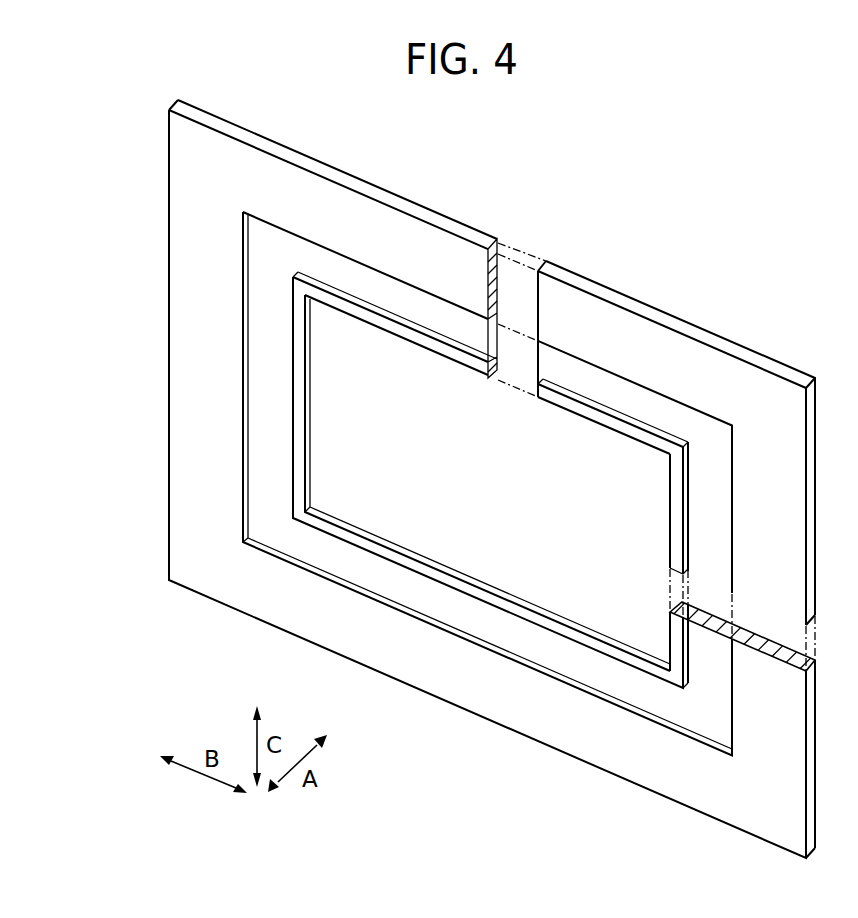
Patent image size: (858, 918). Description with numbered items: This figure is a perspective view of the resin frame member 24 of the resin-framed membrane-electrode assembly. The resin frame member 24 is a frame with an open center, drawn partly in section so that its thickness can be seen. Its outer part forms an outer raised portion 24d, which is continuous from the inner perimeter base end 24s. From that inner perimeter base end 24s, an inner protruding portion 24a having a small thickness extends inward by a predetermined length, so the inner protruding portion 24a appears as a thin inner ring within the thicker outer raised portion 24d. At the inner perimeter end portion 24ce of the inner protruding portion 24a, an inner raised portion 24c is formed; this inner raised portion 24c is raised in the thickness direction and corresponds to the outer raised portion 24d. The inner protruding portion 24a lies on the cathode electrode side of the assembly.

The resin frame member 24 is at (759, 200).
The outer raised portion 24d is at (591, 305).
The inner protruding portion 24a is at (515, 642).
The inner raised portion 24c is at (590, 415).
The inner perimeter end portion 24ce is at (460, 570).
The inner perimeter base end 24s is at (578, 685).